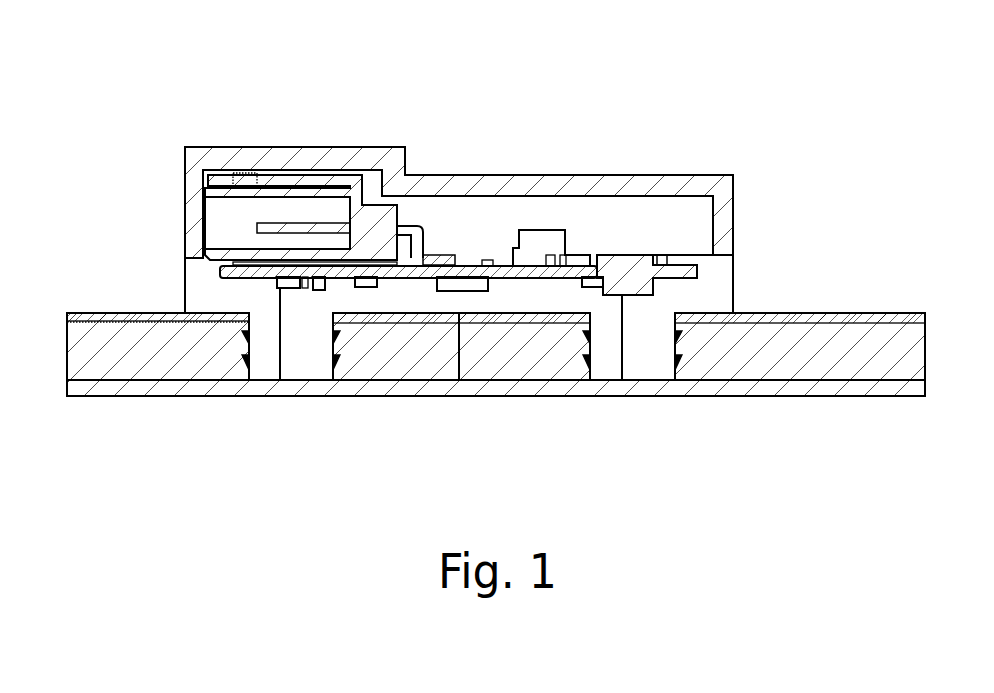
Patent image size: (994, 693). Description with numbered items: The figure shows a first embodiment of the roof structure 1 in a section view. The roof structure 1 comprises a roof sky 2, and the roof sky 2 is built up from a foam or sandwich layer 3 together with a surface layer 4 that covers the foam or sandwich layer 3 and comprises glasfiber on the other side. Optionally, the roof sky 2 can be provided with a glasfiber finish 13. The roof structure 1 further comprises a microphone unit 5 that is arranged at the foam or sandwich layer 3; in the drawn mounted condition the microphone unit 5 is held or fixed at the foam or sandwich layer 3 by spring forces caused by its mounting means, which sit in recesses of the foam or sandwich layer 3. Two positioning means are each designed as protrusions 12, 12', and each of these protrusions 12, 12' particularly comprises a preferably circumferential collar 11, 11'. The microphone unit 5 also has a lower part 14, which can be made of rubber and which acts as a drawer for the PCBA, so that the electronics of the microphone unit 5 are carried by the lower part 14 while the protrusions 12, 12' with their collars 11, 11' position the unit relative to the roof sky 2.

The roof structure 1 is at (160, 88).
The roof sky 2 is at (820, 228).
The foam or sandwich layer 3 is at (870, 325).
The surface layer 4 is at (822, 388).
The microphone unit 5 is at (620, 210).
The collar 11 is at (653, 416).
The collar 11' is at (276, 416).
The protrusion 12 is at (647, 378).
The protrusion 12' is at (307, 389).
The glasfiber finish 13 is at (102, 318).
The lower part 14 is at (202, 277).